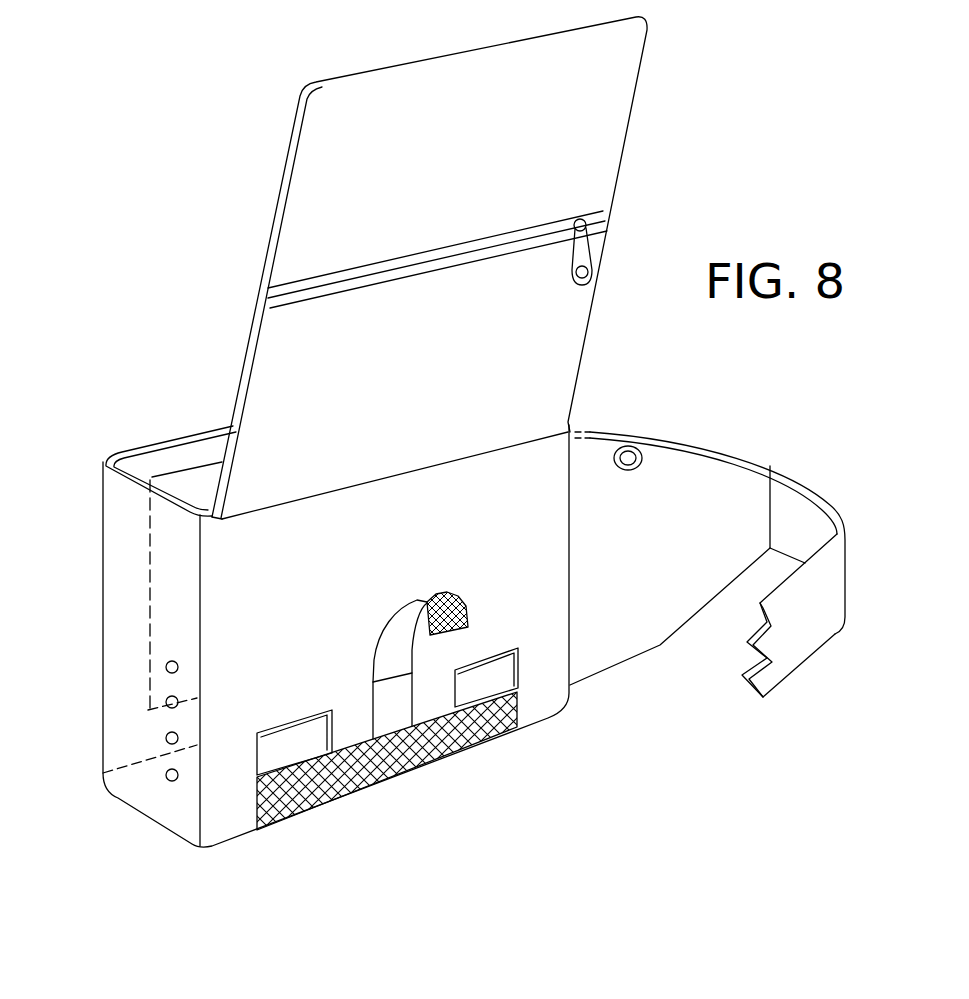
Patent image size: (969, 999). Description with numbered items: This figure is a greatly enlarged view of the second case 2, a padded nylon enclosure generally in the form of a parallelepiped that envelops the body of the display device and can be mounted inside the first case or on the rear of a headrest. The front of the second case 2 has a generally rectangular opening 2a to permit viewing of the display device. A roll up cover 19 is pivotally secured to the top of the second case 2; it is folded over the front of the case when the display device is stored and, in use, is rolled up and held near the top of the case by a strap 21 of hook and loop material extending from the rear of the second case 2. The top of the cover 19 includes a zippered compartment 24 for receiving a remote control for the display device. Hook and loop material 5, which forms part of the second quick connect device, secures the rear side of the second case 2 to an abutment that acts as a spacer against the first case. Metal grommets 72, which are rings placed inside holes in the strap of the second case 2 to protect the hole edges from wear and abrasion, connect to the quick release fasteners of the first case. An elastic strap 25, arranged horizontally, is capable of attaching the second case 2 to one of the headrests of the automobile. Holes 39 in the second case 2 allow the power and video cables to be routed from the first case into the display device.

The second case 2 is at (733, 67).
The rectangular opening 2a is at (193, 467).
The hook and loop material 5 is at (392, 778).
The roll up cover 19 is at (315, 178).
The strap of hook and loop material 21 is at (447, 632).
The zippered compartment 24 is at (608, 222).
The elastic strap 25 is at (763, 697).
The holes 39 is at (168, 800).
The metal grommets 72 is at (640, 449).